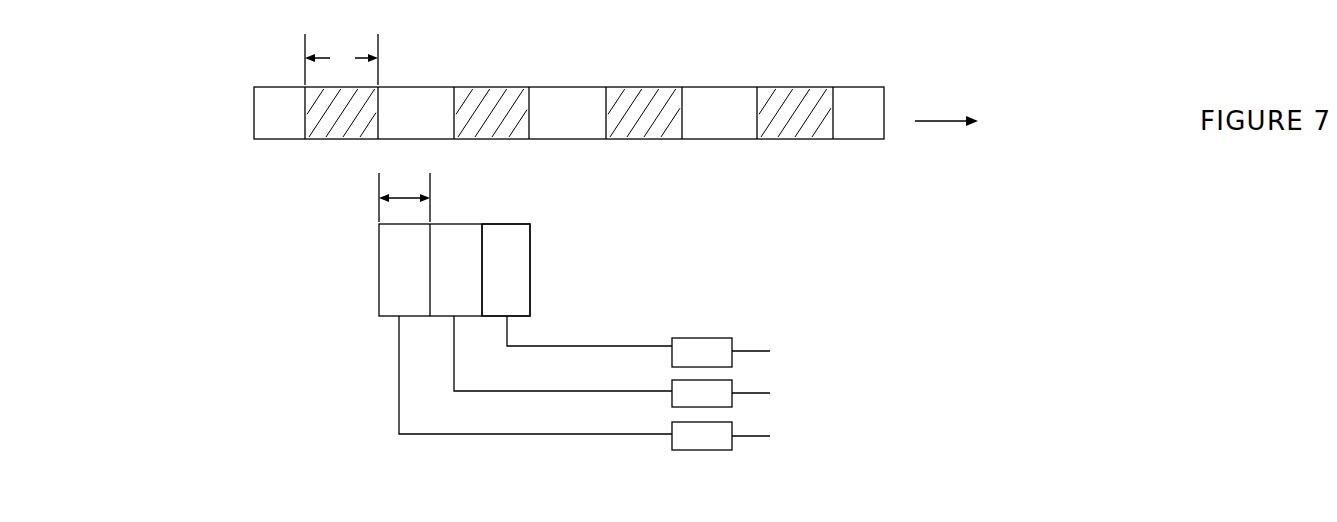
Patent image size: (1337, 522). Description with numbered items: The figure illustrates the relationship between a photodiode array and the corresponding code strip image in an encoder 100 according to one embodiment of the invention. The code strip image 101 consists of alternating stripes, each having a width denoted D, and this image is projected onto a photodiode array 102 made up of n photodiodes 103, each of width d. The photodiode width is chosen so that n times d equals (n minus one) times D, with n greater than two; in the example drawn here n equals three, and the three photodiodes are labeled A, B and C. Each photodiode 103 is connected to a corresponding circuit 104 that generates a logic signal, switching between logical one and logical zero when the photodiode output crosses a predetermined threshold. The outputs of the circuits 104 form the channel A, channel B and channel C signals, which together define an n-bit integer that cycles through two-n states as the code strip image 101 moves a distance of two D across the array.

The encoder 100 is at (183, 87).
The code strip image 101 is at (562, 87).
The photodiode array 102 is at (379, 266).
The photodiodes 103 is at (505, 226).
The circuit 104 is at (712, 338).